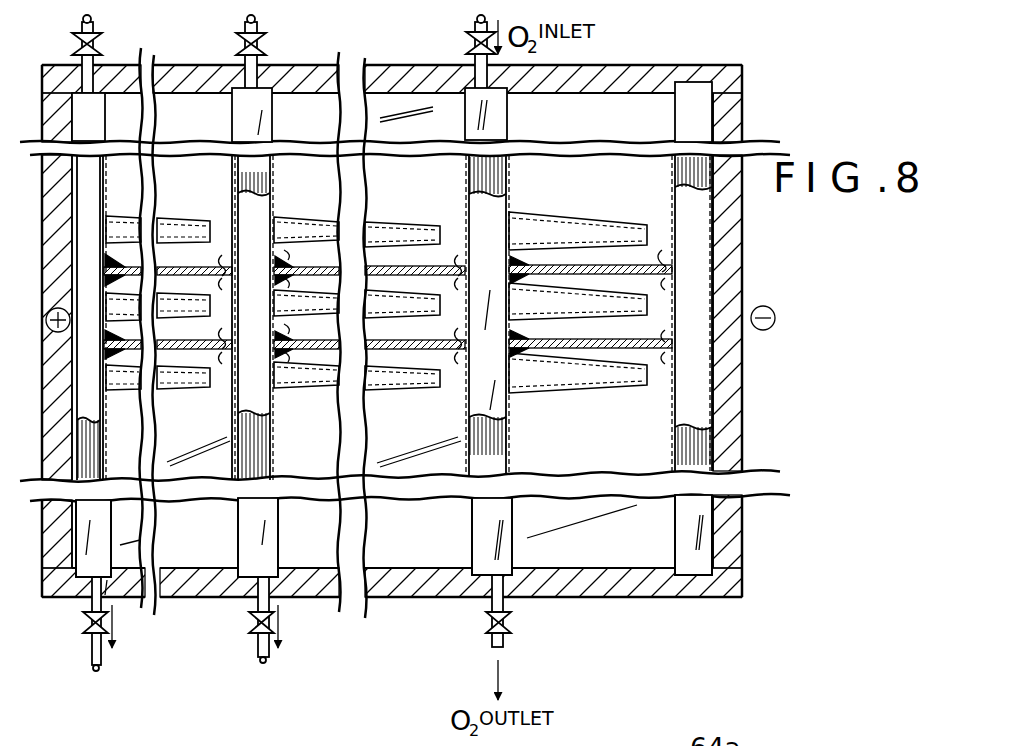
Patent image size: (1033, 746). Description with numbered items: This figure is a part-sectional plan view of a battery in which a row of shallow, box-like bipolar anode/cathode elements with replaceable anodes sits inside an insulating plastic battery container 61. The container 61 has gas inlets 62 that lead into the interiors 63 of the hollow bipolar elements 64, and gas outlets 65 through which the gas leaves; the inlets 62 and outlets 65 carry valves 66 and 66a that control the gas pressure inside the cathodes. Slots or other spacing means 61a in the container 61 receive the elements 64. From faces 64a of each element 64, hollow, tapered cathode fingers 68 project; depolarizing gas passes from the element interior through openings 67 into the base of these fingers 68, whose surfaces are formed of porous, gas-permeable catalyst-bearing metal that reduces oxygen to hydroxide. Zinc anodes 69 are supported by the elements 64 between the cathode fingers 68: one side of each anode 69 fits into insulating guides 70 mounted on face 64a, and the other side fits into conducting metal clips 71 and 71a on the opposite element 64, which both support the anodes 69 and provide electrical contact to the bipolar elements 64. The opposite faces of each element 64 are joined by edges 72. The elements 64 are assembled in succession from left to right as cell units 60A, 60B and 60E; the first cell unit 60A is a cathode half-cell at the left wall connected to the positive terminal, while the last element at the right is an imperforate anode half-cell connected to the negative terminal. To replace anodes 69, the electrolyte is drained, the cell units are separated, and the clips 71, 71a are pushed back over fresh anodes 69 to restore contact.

The first cell unit 60A is at (162, 124).
The second cell unit 60B is at (292, 124).
The end cell unit 60E is at (582, 114).
The battery container 61 is at (411, 365).
The slots or spacing means 61a is at (470, 93).
The gas inlets 62 is at (255, 92).
The interiors of the hollow bipolar elements 63 is at (250, 375).
The hollow bipolar box-like elements 64 is at (228, 188).
The faces of the elements 64a is at (505, 200).
The gas outlets 65 is at (92, 592).
The inlet valves 66 is at (237, 43).
The outlet valves 66a is at (93, 634).
The openings 67 is at (280, 232).
The hollow cathode fingers 68 is at (407, 222).
The anodes 69 is at (219, 266).
The insulating guides 70 is at (276, 272).
The conducting metal clip 71 is at (661, 262).
The conducting metal clip 71a is at (688, 284).
The edges 72 is at (255, 562).